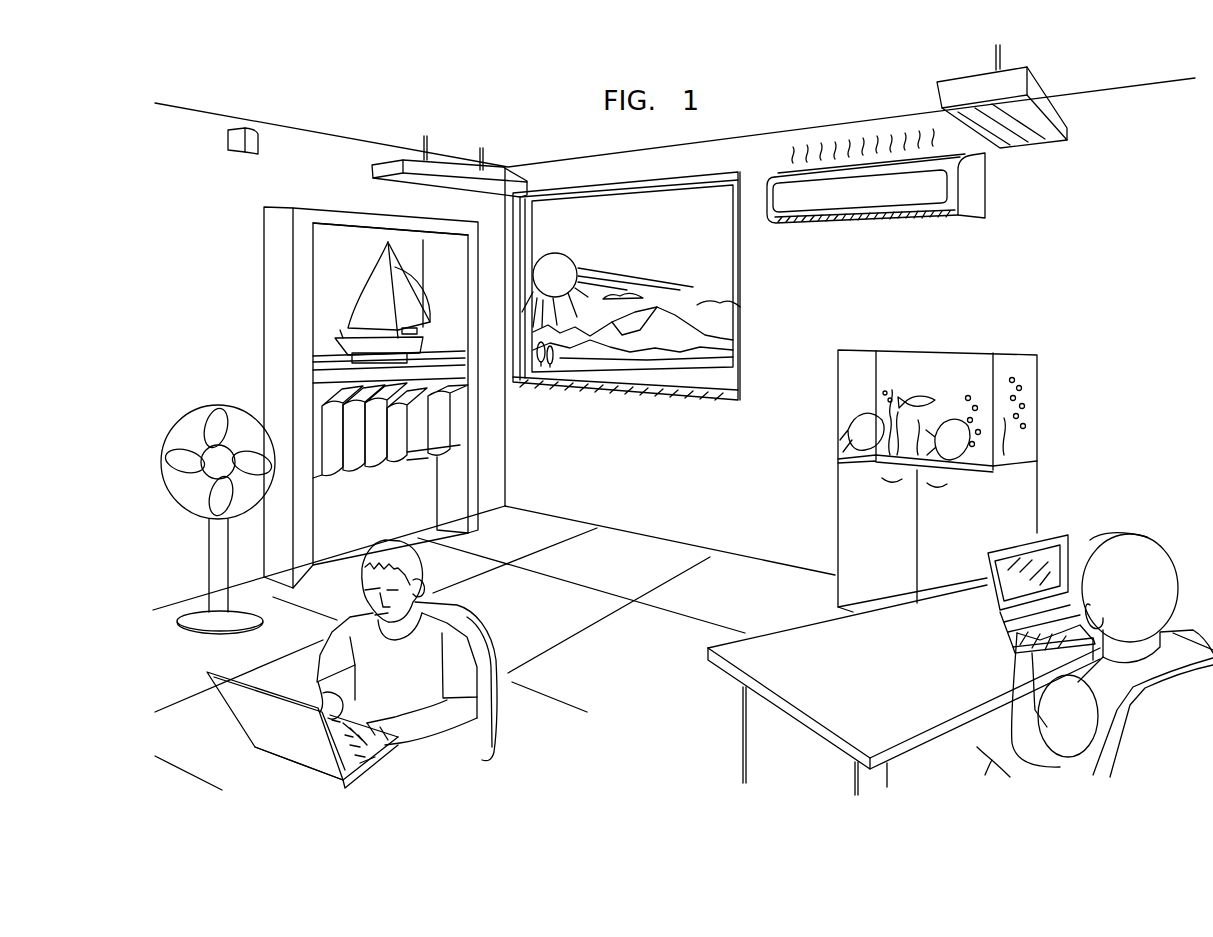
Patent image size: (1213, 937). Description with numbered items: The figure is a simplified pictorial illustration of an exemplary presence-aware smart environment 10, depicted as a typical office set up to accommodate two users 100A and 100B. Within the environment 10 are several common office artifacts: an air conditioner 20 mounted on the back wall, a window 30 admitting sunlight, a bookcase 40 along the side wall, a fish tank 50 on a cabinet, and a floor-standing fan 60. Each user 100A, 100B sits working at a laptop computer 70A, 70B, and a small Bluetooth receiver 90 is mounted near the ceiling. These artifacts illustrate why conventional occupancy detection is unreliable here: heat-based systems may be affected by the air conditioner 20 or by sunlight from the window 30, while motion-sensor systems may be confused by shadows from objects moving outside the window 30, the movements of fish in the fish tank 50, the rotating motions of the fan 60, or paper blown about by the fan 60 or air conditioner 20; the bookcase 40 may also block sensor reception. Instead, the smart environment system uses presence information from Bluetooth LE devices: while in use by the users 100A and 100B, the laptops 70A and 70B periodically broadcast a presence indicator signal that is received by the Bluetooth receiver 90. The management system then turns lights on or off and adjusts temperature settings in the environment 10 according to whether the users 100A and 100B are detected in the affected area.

The presence-aware smart environment 10 is at (1123, 117).
The air conditioner 20 is at (980, 192).
The window 30 is at (742, 278).
The bookcase 40 is at (272, 265).
The fish tank 50 is at (1038, 372).
The fan 60 is at (193, 415).
The laptop computer 70A is at (350, 787).
The laptop computer 70B is at (998, 622).
The Bluetooth receiver 90 is at (253, 135).
The user 100A is at (440, 607).
The user 100B is at (1143, 543).